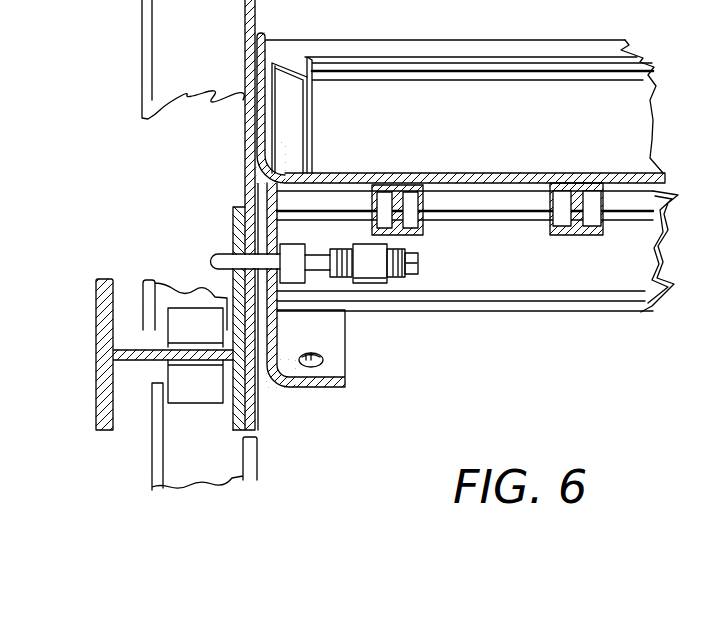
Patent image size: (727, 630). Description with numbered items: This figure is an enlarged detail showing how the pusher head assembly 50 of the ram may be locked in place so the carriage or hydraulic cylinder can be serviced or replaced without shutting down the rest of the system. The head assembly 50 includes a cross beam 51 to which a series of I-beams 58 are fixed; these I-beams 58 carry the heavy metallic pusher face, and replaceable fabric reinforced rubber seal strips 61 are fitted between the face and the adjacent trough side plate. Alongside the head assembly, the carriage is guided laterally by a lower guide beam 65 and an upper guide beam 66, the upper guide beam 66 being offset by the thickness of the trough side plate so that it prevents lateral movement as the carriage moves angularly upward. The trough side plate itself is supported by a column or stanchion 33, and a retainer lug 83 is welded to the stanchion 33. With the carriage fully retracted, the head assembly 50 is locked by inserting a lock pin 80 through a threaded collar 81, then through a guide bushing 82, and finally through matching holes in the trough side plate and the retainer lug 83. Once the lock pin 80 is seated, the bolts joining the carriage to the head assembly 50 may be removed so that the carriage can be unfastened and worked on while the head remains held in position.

The stanchion 33 is at (98, 299).
The pusher head assembly 50 is at (415, 35).
The cross beam 51 is at (651, 240).
The I-beam 58 is at (553, 196).
The seal strip 61 is at (260, 112).
The lower guide beam 65 is at (172, 458).
The upper guide beam 66 is at (163, 43).
The lock pin 80 is at (420, 261).
The threaded collar 81 is at (380, 285).
The guide bushing 82 is at (308, 282).
The retainer lug 83 is at (242, 198).